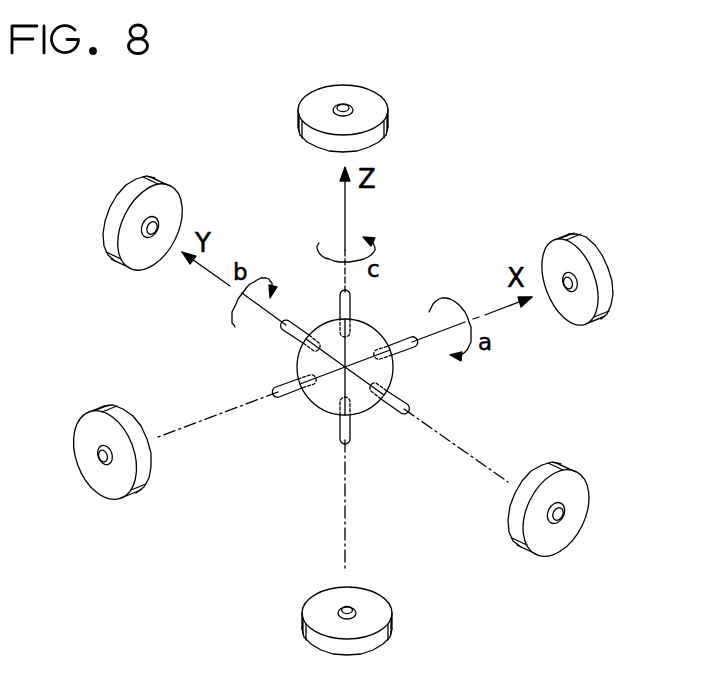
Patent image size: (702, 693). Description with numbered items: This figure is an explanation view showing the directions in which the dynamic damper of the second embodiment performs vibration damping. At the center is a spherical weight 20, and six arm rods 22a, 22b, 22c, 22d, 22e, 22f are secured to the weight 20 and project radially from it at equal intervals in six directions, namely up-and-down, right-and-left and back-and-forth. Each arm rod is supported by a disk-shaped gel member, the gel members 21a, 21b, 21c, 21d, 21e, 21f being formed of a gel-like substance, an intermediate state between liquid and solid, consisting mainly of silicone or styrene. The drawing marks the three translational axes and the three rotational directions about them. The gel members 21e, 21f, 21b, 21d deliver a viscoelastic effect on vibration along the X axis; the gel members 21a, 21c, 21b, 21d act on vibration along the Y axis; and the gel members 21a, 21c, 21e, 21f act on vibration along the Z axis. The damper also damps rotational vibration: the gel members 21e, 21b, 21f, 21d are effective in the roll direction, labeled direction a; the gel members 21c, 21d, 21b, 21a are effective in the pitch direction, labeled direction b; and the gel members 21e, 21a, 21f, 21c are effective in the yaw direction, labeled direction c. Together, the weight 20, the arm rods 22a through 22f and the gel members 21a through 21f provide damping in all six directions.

The spherical weight 20 is at (328, 400).
The gel member 21a is at (556, 247).
The gel member 21b is at (366, 596).
The gel member 21c is at (112, 410).
The gel member 21d is at (384, 127).
The gel member 21e is at (558, 467).
The gel member 21f is at (179, 201).
The arm rod 22a is at (400, 343).
The arm rod 22b is at (352, 430).
The arm rod 22c is at (282, 393).
The arm rod 22d is at (350, 304).
The arm rod 22e is at (408, 400).
The arm rod 22f is at (290, 332).